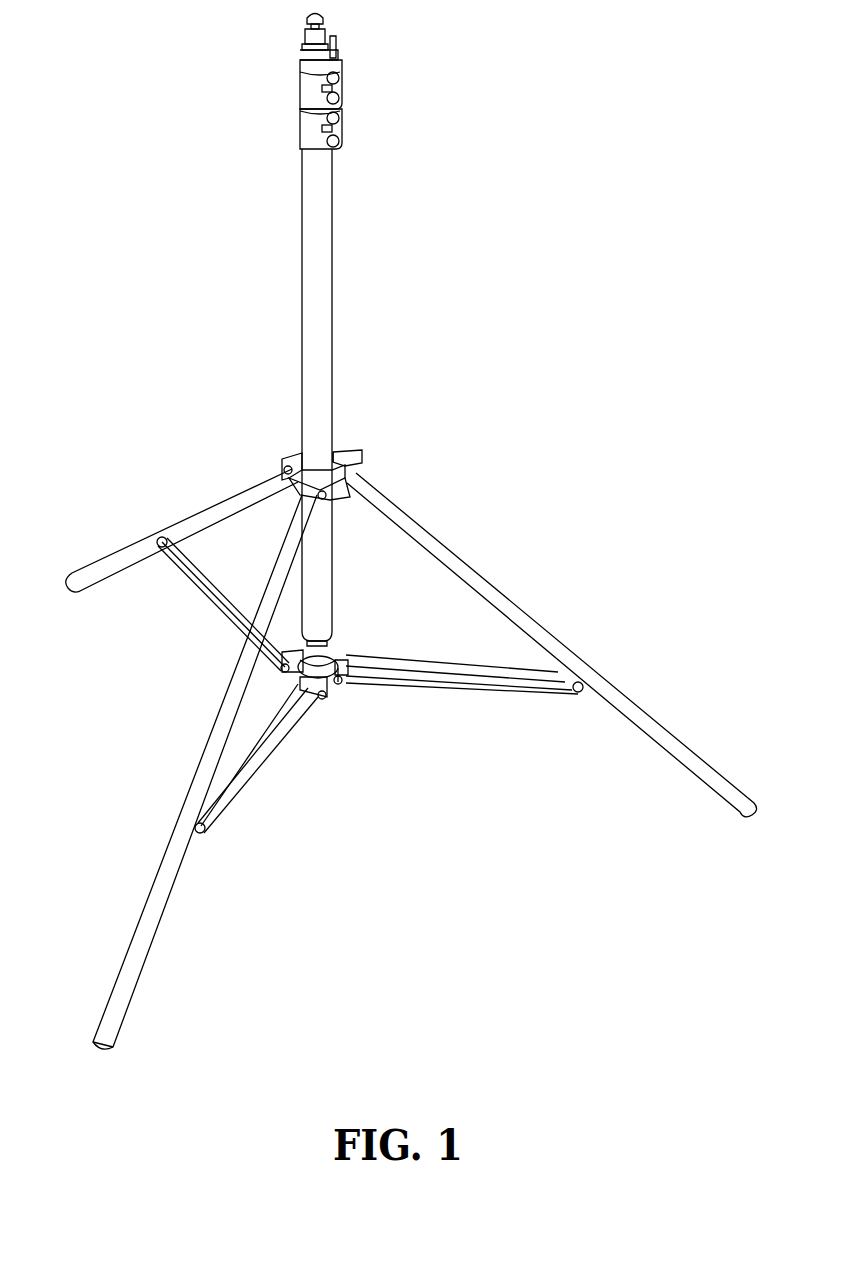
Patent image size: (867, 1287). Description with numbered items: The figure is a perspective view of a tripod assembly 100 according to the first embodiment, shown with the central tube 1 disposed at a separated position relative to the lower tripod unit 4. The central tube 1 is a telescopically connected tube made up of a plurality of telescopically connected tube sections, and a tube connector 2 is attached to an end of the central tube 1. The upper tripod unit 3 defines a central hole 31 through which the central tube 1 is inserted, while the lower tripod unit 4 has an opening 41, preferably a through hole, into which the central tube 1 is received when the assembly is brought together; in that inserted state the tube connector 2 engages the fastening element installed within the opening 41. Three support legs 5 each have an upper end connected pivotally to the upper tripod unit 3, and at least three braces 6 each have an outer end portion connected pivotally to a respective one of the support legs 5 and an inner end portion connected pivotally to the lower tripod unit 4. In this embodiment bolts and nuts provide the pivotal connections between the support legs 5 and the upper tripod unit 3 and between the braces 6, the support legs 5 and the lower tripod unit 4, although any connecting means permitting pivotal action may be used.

The tripod assembly 100 is at (462, 220).
The central tube 1 is at (335, 372).
The tube connector 2 is at (340, 642).
The upper tripod unit 3 is at (292, 456).
The central hole 31 is at (346, 454).
The lower tripod unit 4 is at (330, 693).
The opening 41 is at (340, 667).
The support legs 5 is at (500, 592).
The braces 6 is at (410, 690).